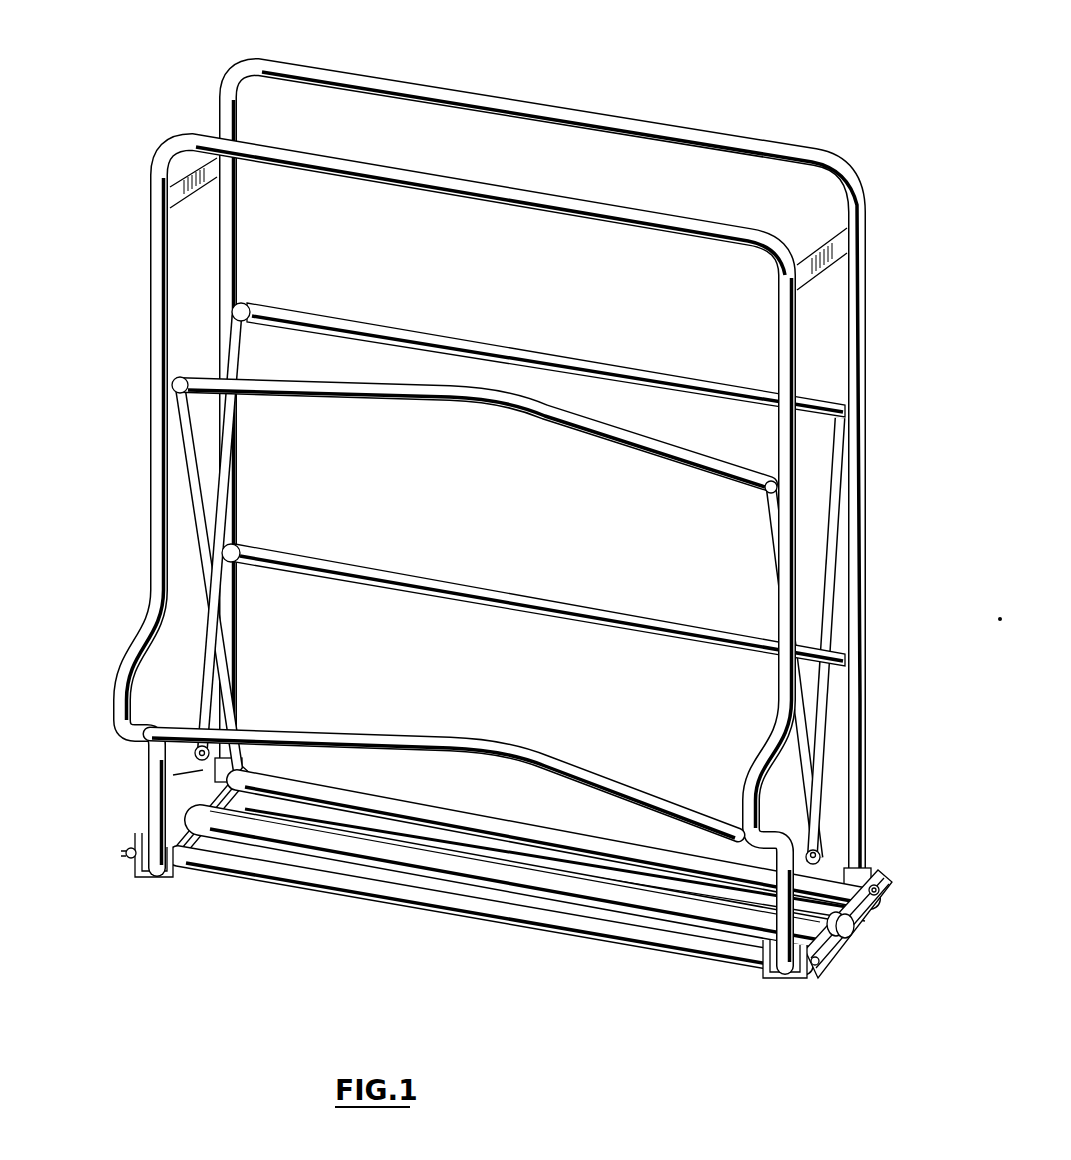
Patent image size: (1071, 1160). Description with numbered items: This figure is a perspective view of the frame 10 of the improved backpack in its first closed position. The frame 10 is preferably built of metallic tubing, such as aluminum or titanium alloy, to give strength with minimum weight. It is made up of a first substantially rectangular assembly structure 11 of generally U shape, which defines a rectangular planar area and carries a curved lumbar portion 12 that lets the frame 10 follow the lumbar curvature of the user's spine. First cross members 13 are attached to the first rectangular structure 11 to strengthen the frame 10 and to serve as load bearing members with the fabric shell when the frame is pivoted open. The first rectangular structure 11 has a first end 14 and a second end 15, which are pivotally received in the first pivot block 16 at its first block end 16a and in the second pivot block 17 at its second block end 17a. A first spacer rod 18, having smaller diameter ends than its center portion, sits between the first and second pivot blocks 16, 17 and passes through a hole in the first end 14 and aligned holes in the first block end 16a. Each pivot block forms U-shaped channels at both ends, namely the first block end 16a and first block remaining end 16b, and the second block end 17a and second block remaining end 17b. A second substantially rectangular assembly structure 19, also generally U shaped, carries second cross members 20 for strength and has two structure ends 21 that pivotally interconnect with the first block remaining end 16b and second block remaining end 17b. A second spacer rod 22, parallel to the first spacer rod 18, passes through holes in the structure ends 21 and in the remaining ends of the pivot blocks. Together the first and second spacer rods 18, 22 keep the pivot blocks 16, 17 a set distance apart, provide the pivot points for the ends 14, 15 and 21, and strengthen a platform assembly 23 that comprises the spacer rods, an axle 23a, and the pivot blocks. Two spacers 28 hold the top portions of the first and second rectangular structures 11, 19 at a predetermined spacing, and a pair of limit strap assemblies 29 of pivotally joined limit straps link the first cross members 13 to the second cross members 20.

The frame 10 is at (686, 66).
The first rectangular assembly structure 11 is at (425, 554).
The lumbar portion 12 is at (121, 706).
The first cross members 13 is at (345, 398).
The first end 14 is at (143, 823).
The second end 15 is at (800, 938).
The first pivot block 16 is at (183, 870).
The first block end 16a is at (155, 880).
The first block remaining end 16b is at (172, 775).
The second pivot block 17 is at (858, 912).
The second block end 17a is at (781, 974).
The second block remaining end 17b is at (874, 882).
The first spacer rod 18 is at (580, 930).
The second rectangular assembly structure 19 is at (722, 124).
The second cross members 20 is at (462, 342).
The structure ends 21 is at (234, 701).
The second spacer rod 22 is at (400, 800).
The platform assembly 23 is at (496, 920).
The axle 23a is at (350, 866).
The spacers 28 is at (205, 178).
The limit strap assemblies 29 is at (188, 550).